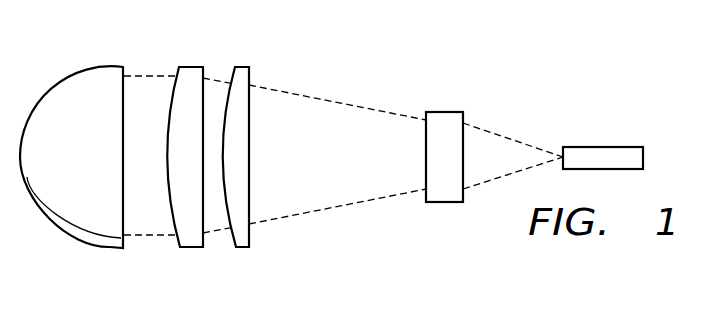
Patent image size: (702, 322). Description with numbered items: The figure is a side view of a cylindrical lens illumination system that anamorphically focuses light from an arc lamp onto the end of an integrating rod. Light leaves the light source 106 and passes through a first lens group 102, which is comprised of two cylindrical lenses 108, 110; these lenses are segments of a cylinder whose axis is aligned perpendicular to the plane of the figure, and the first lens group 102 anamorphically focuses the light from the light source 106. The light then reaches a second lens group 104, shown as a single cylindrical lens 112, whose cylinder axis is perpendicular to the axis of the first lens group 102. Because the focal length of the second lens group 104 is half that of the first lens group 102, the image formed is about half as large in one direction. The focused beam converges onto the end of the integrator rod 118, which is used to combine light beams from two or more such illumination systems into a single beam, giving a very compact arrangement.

The first lens group 102 is at (215, 153).
The second lens group 104 is at (444, 147).
The light source 106 is at (90, 75).
The cylindrical lens 108 is at (192, 241).
The cylindrical lens 110 is at (242, 241).
The cylindrical lens 112 is at (442, 196).
The integrator rod 118 is at (602, 146).